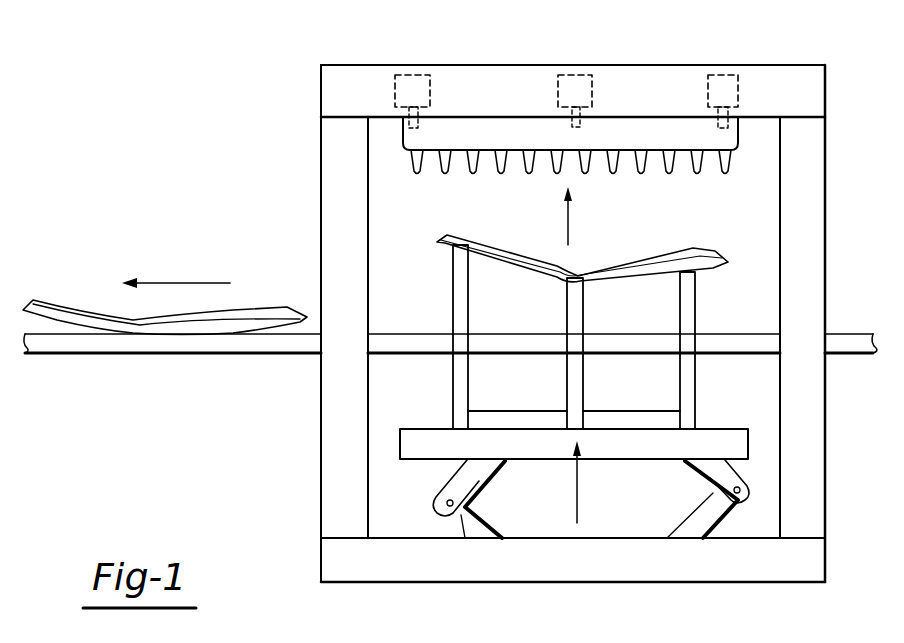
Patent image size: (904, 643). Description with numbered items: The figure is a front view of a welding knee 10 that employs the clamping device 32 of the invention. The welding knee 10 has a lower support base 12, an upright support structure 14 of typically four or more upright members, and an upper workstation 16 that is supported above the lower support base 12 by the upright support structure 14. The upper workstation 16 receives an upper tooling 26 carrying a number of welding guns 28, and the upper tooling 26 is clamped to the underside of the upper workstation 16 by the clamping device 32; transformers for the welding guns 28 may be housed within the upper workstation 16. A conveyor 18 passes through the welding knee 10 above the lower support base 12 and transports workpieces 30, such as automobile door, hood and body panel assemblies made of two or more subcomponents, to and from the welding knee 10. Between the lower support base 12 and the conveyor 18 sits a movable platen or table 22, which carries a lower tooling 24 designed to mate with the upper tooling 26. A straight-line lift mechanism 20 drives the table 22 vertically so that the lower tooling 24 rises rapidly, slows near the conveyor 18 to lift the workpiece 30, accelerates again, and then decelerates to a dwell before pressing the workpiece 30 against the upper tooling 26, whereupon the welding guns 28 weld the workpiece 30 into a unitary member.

The welding knee 10 is at (200, 143).
The lower support base 12 is at (693, 567).
The upright support structure 14 is at (345, 475).
The upper workstation 16 is at (655, 90).
The conveyor 18 is at (73, 343).
The straight-line lift mechanism 20 is at (443, 512).
The table 22 is at (625, 446).
The lower tooling 24 is at (695, 398).
The upper tooling 26 is at (730, 137).
The welding guns 28 is at (675, 175).
The workpieces 30 is at (85, 313).
The clamping device 32 is at (433, 80).